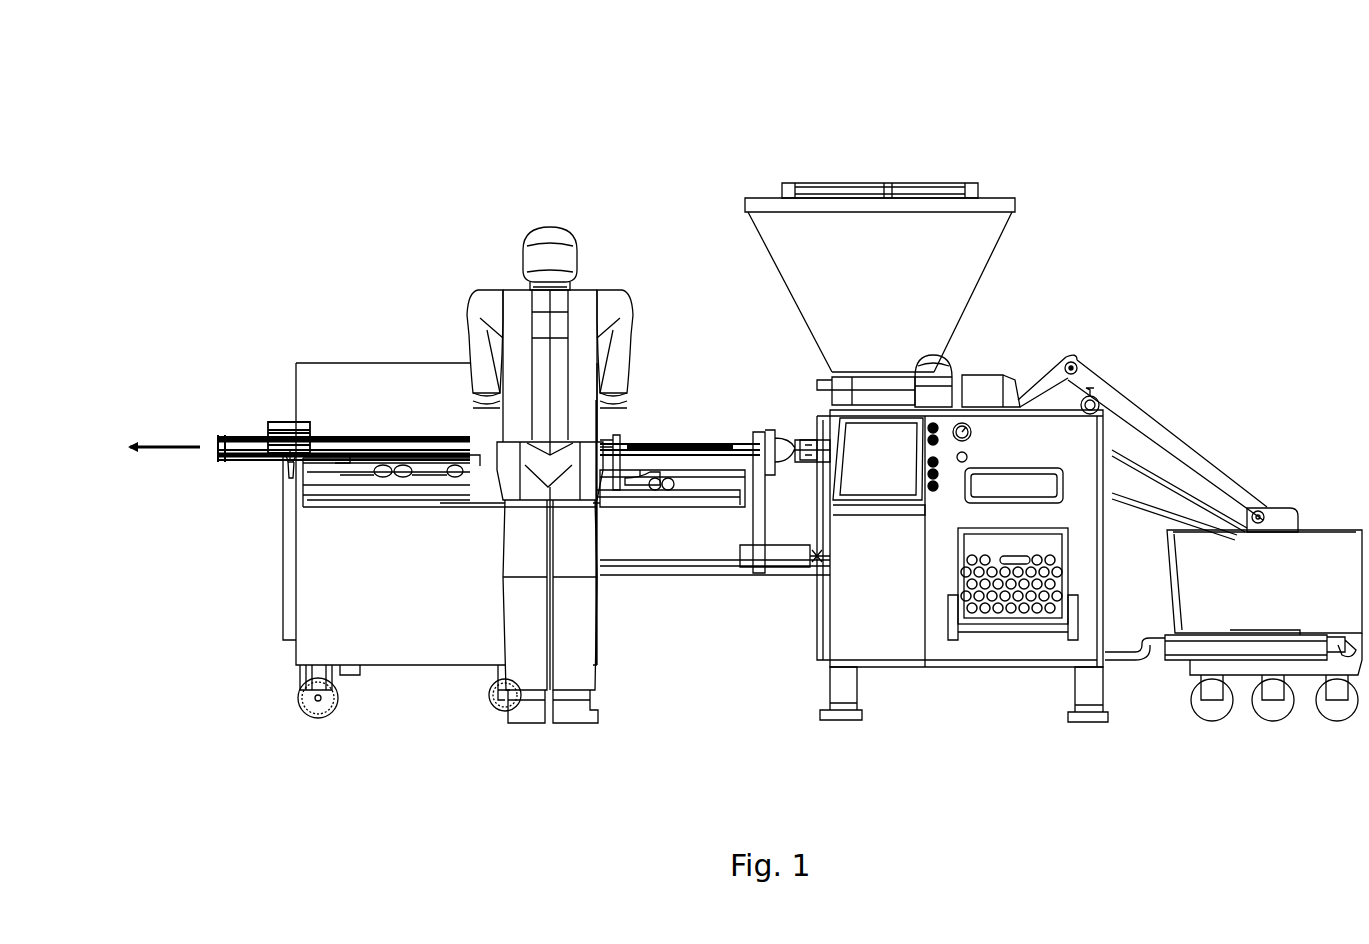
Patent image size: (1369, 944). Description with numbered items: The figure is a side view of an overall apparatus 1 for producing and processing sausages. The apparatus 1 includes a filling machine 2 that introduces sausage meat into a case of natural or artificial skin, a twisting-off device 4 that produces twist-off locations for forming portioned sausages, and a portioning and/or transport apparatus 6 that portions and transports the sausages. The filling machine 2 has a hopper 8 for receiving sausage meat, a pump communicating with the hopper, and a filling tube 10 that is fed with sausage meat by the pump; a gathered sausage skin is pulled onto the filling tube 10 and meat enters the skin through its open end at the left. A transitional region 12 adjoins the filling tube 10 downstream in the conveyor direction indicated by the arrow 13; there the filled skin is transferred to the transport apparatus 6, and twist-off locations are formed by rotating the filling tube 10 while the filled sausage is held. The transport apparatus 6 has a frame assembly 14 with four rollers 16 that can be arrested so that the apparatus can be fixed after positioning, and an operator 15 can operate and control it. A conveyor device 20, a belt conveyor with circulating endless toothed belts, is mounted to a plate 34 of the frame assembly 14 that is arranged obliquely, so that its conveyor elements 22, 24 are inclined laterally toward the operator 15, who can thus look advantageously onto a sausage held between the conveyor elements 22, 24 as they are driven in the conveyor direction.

The overall apparatus 1 is at (245, 148).
The filling machine 2 is at (1098, 200).
The twisting-off device 4 is at (658, 402).
The portioning and/or transport apparatus 6 is at (372, 345).
The hopper 8 is at (906, 172).
The filling tube 10 is at (688, 448).
The transitional region 12 is at (617, 500).
The conveyor direction arrow 13 is at (153, 437).
The frame assembly 14 is at (285, 553).
The operator 15 is at (550, 200).
The rollers 16 is at (306, 712).
The conveyor device 20 is at (435, 418).
The conveyor element 22 is at (337, 440).
The conveyor element 24 is at (350, 455).
The plate 34 is at (374, 493).